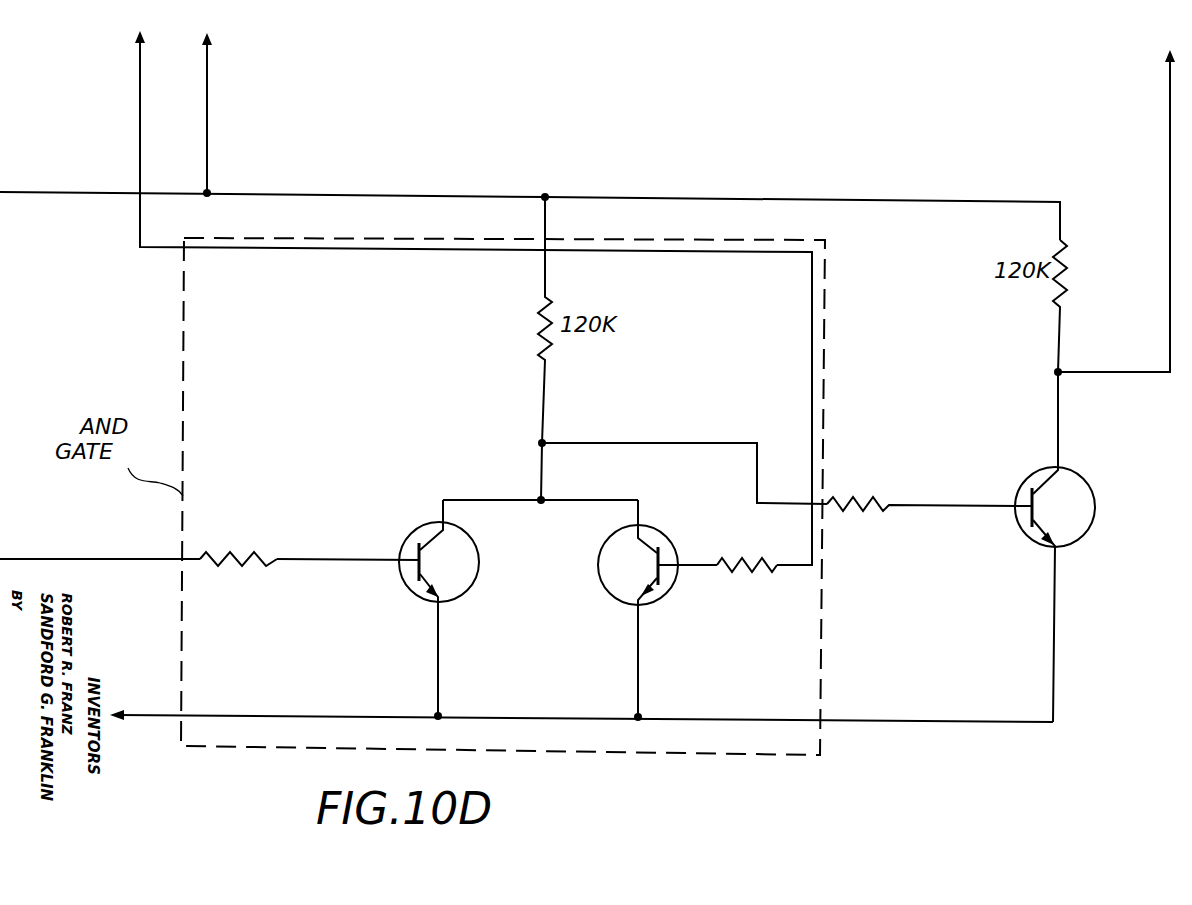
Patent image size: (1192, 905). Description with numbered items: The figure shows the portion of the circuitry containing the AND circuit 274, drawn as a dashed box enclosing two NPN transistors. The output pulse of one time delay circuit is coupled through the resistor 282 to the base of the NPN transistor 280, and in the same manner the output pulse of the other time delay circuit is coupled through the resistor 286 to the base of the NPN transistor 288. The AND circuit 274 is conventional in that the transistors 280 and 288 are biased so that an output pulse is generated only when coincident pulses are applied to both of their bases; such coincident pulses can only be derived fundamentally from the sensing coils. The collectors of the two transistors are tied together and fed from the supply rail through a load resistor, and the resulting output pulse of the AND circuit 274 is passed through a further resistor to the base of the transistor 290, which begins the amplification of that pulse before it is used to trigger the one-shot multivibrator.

The AND circuit 274 is at (183, 343).
The NPN transistor 280 is at (672, 590).
The resistor 282 is at (765, 572).
The resistor 286 is at (258, 566).
The NPN transistor 288 is at (400, 547).
The transistor 290 is at (1030, 478).